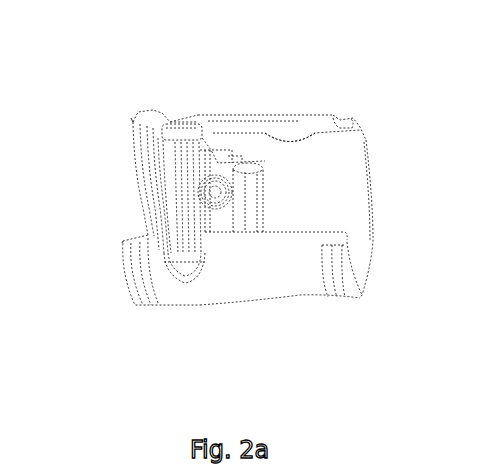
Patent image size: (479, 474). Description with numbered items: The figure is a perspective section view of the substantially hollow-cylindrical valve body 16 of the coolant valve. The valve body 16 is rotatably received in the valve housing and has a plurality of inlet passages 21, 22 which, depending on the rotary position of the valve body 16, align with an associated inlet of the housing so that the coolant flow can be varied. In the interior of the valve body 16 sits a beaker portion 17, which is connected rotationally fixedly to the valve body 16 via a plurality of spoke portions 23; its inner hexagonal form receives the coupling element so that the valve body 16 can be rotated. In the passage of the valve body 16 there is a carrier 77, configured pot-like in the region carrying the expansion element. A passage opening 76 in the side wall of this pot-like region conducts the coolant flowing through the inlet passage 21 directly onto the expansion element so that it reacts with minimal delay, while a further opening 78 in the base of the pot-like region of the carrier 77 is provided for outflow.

The valve body 16 is at (143, 208).
The beaker portion 17 is at (260, 175).
The inlet passage 21 is at (190, 278).
The inlet passage 22 is at (300, 142).
The spoke portions 23 is at (188, 138).
The passage opening 76 is at (217, 190).
The carrier 77 is at (203, 153).
The further opening 78 is at (258, 206).